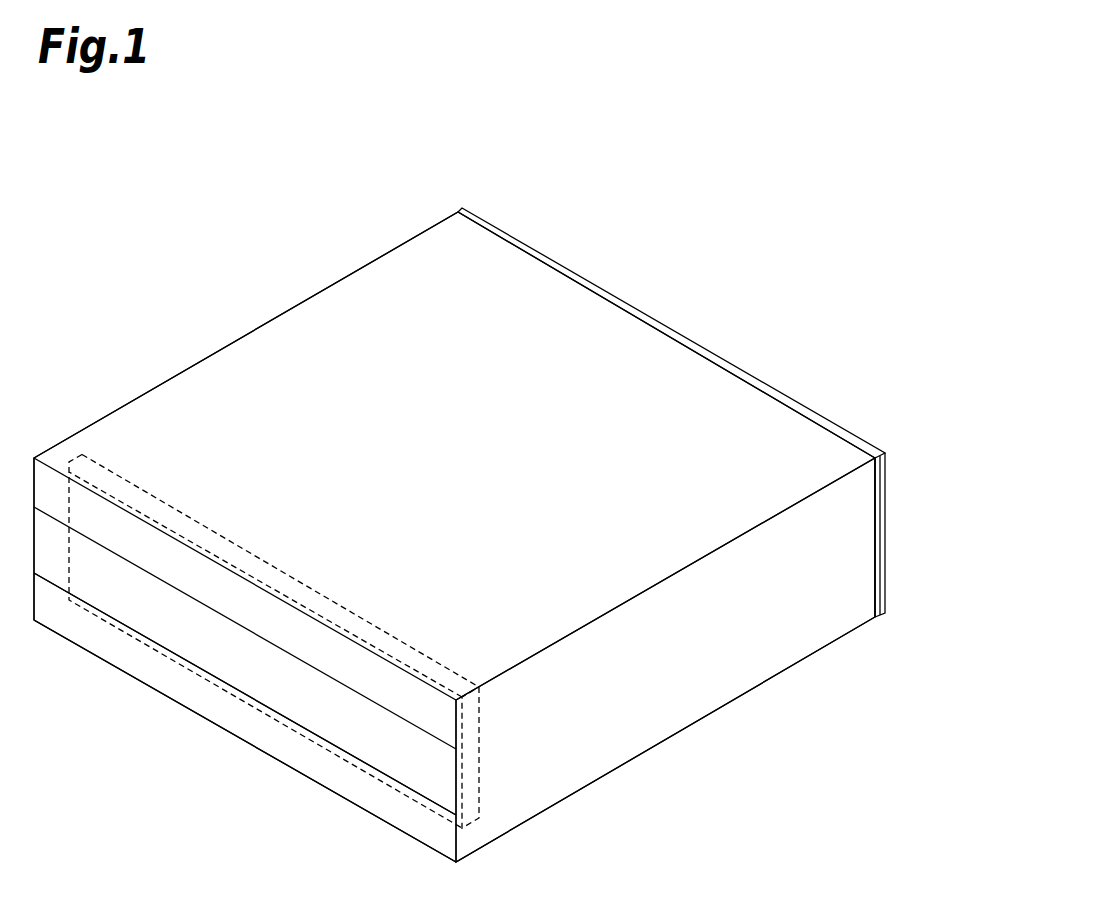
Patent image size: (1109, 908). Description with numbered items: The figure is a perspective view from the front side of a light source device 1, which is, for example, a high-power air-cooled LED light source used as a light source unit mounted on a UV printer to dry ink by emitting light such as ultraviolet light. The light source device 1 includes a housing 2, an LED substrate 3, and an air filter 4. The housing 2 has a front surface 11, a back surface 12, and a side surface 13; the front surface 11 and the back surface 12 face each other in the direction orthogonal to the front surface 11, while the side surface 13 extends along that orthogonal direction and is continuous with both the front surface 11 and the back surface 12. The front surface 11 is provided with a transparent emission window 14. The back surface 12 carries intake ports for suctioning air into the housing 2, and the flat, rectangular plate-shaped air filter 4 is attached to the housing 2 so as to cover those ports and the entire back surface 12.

The light source device 1 is at (543, 212).
The housing 2 is at (687, 682).
The LED substrate 3 is at (480, 765).
The air filter 4 is at (887, 573).
The front surface 11 is at (275, 738).
The back surface 12 is at (640, 318).
The side surface 13 is at (328, 360).
The transparent emission window 14 is at (150, 618).